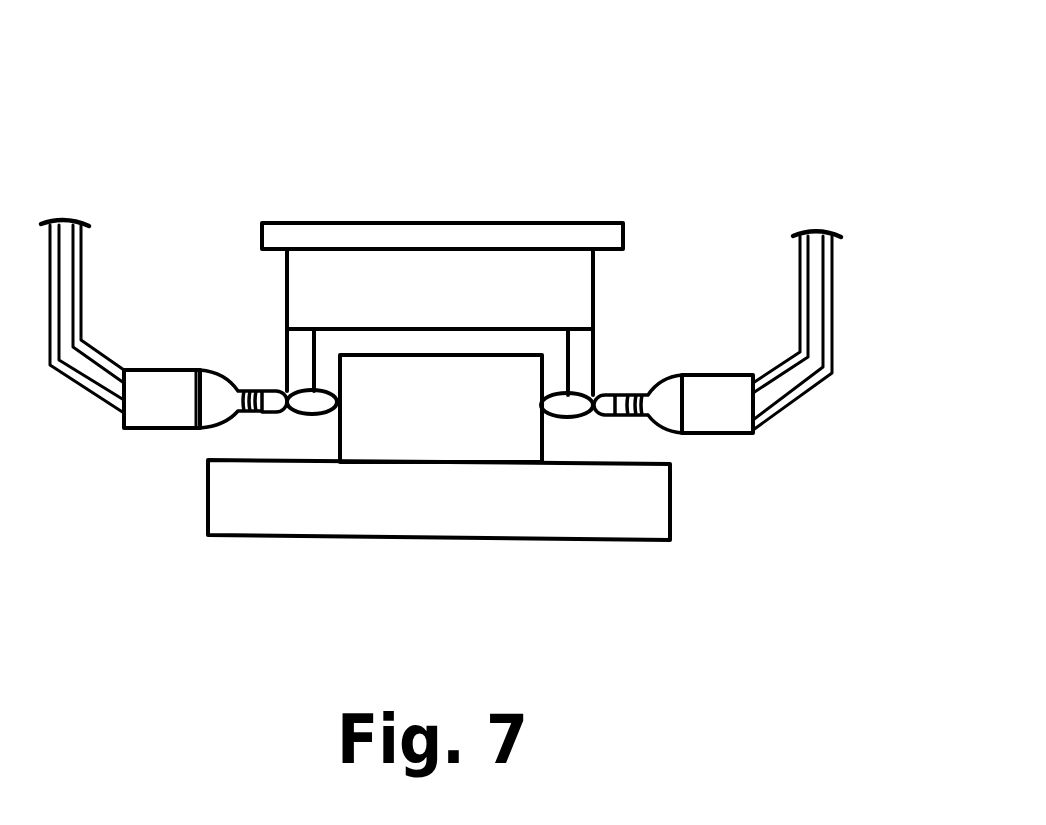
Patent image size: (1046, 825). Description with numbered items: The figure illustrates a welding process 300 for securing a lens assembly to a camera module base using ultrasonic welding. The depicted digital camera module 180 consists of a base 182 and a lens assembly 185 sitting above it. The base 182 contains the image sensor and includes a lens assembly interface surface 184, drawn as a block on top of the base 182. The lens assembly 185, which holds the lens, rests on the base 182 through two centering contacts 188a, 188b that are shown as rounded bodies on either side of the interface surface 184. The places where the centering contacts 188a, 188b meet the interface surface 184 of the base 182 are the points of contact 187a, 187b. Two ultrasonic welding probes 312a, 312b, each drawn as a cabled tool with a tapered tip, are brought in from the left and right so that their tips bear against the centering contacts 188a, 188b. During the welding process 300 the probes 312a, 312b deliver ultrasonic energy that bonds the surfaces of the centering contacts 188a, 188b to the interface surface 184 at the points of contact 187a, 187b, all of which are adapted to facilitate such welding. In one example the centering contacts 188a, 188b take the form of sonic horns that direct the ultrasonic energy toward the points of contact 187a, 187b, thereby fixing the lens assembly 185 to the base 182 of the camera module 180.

The welding process 300 is at (672, 58).
The digital camera module 180 is at (470, 162).
The lens assembly 185 is at (596, 298).
The lens assembly interface surface 184 is at (548, 462).
The base 182 is at (670, 512).
The centering contact 188a is at (287, 417).
The centering contact 188b is at (580, 417).
The point of contact 187a is at (338, 413).
The point of contact 187b is at (543, 418).
The ultrasonic welding probe 312a is at (177, 368).
The ultrasonic welding probe 312b is at (757, 430).